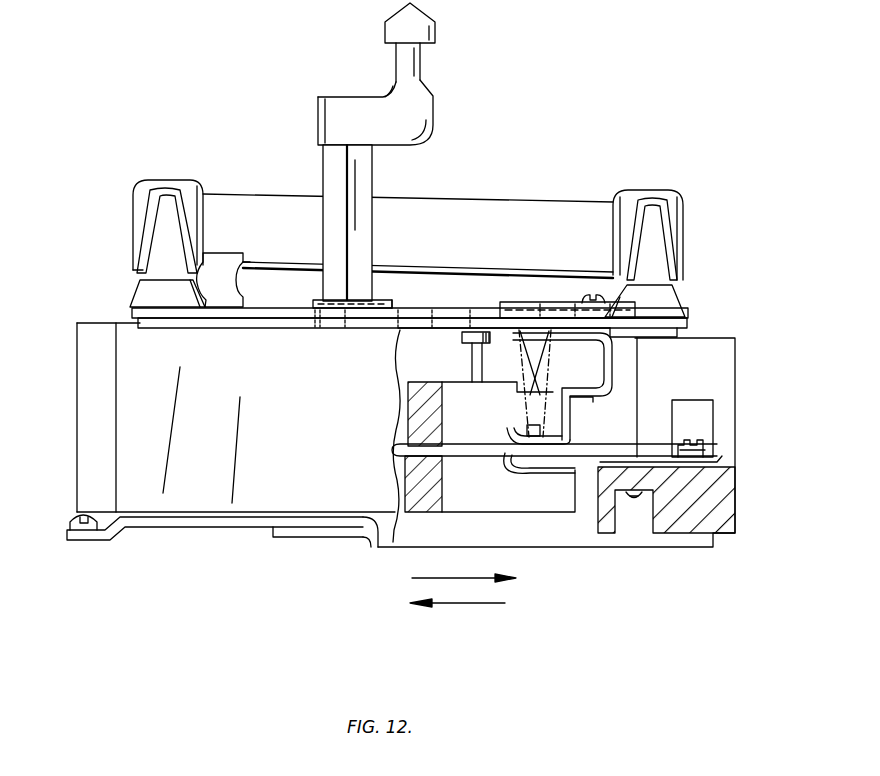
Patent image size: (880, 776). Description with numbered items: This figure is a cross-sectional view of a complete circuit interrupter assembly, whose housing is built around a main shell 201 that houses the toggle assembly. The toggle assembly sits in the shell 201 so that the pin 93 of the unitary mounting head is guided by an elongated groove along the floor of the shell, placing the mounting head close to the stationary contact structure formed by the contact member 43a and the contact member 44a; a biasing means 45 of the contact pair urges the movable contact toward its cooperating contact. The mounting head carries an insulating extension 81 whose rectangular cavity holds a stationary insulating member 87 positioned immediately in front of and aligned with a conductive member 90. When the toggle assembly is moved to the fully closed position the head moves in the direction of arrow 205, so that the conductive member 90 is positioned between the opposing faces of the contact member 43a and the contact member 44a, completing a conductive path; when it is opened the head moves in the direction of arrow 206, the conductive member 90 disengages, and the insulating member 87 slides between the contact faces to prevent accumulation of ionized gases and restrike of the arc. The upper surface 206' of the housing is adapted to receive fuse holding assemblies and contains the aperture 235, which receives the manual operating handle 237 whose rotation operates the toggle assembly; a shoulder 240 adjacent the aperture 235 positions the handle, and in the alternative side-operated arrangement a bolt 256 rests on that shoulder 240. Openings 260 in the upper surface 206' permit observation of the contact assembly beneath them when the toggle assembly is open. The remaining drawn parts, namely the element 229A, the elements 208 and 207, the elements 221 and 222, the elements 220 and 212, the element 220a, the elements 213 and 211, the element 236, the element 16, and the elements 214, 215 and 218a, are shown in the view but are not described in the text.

The manual operating handle 237 is at (426, 64).
The housing block 229A is at (518, 247).
The left spring clip 208 is at (146, 232).
The right spring clip 207 is at (668, 232).
The clip side wall / latch block 221 is at (220, 258).
The ledge of housing block 222 is at (246, 262).
The base plate 220 is at (130, 306).
The guide rail 212 is at (690, 324).
The upper surface of housing assembly 206' is at (98, 312).
The shoulder 240 is at (300, 304).
The aperture 235 is at (308, 294).
The bolt 256 is at (380, 303).
The openings 260 is at (456, 298).
The plate portion 220a is at (492, 312).
The carrier block 213 is at (567, 297).
The detent bump 211 is at (592, 297).
The main shell 201 is at (115, 364).
The bottom plate 236 is at (198, 529).
The extension 81 is at (505, 502).
The conductive member 90 is at (458, 458).
The slide bar 16 is at (402, 447).
The pin 93 is at (470, 353).
The biasing means 45 is at (553, 360).
The contact member 44a is at (590, 397).
The stationary insulating member 87 is at (560, 451).
The contact member 43a is at (520, 470).
The screw 214 is at (634, 500).
The switch block 215 is at (718, 419).
The contact bracket 218a is at (703, 443).
The arrow 205 is at (476, 574).
The arrow 206 is at (457, 617).